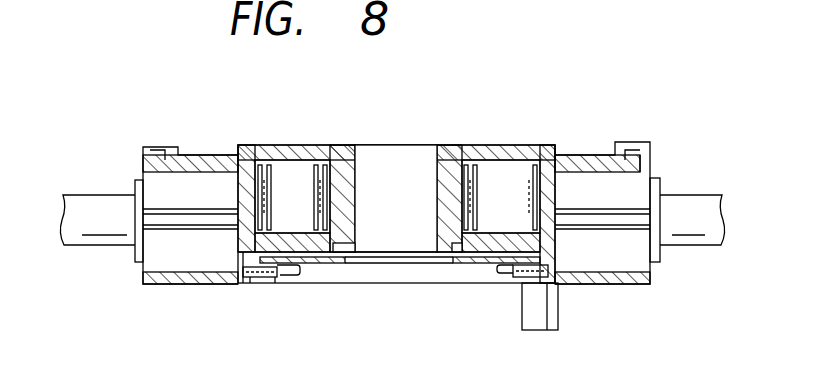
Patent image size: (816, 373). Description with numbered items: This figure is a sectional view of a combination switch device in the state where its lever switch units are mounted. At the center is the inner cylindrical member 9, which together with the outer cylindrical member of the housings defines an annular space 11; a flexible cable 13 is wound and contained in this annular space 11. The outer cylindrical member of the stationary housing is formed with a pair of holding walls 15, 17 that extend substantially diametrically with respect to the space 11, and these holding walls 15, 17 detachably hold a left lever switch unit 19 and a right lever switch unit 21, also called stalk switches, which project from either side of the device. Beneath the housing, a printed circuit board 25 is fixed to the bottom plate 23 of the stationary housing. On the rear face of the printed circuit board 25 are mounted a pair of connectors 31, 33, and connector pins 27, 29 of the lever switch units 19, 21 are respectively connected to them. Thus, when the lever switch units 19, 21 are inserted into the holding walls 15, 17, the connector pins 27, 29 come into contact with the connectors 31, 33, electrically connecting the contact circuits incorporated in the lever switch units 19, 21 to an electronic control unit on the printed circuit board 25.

The inner cylindrical member 9 is at (437, 168).
The annular space 11 is at (283, 177).
The flexible cable 13 is at (309, 176).
The holding wall 15 is at (178, 284).
The holding wall 17 is at (641, 284).
The left lever switch unit 19 is at (95, 246).
The right lever switch unit 21 is at (697, 195).
The bottom plate 23 is at (478, 258).
The printed circuit board 25 is at (328, 257).
The connector pin 27 is at (252, 280).
The connector pin 29 is at (538, 290).
The connector 31 is at (275, 277).
The connector 33 is at (510, 283).